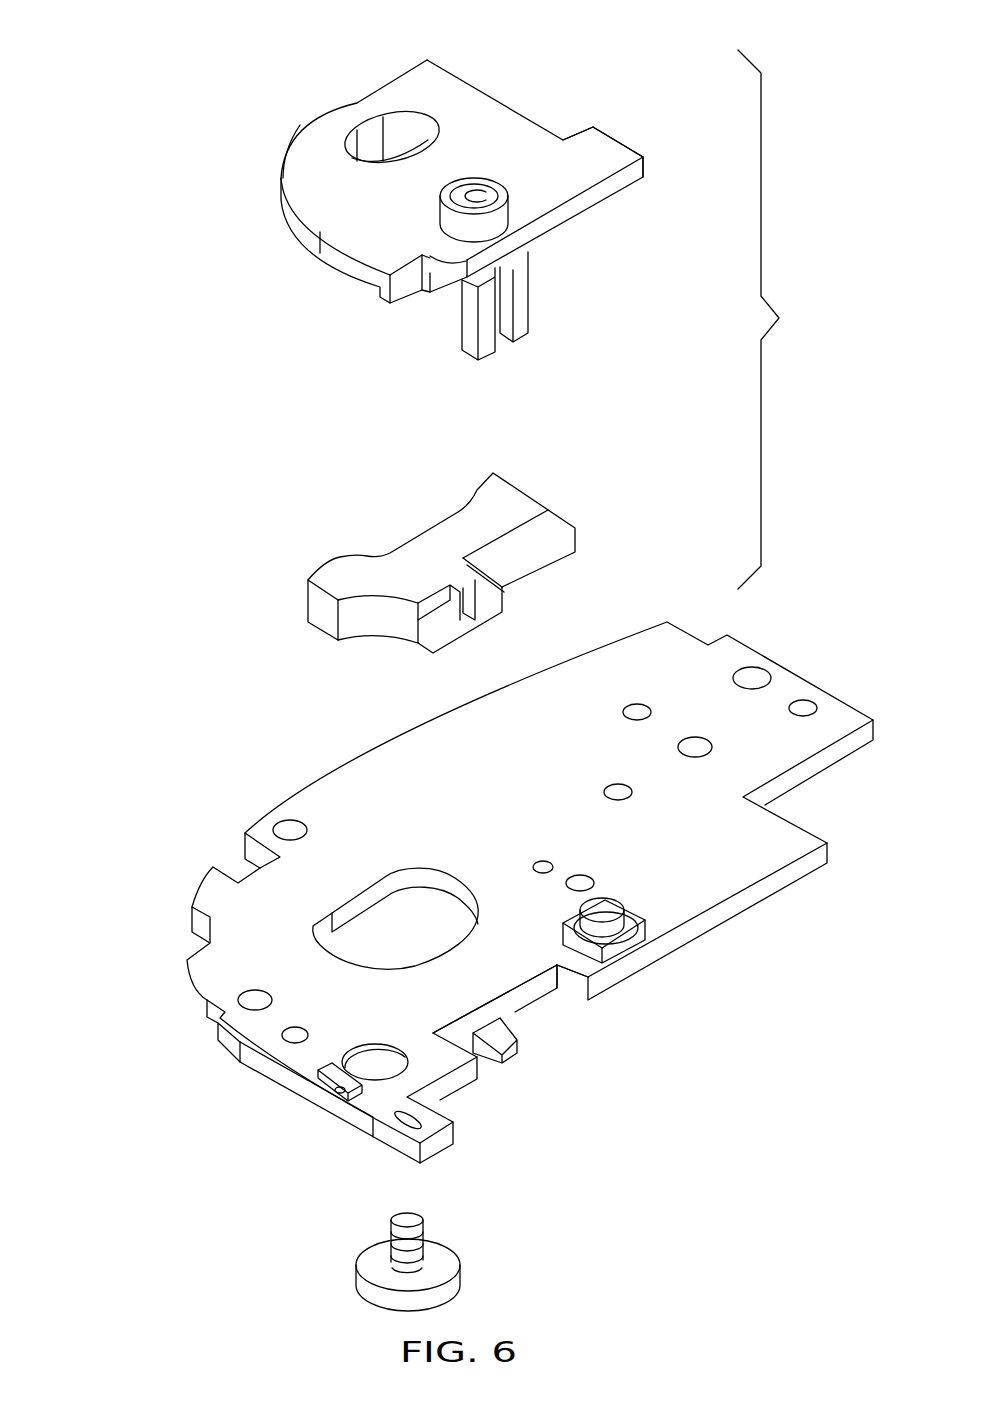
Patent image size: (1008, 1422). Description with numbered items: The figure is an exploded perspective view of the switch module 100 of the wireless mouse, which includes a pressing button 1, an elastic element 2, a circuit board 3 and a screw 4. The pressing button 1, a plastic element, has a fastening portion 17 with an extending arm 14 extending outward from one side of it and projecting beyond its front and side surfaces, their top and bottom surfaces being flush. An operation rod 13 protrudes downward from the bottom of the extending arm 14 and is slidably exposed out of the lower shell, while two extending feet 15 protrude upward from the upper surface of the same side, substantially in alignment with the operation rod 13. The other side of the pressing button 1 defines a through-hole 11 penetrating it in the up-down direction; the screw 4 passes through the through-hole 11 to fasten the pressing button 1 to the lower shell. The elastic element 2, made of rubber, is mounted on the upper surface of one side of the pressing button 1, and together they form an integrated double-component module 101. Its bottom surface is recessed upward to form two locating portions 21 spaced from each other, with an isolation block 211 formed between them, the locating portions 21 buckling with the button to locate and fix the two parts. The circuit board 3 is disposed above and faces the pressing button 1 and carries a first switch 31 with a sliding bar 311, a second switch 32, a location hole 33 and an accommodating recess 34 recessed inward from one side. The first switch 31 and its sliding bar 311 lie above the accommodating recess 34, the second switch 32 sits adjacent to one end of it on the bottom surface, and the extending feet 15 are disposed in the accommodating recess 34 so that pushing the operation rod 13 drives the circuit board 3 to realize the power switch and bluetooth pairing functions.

The switch module 100 is at (122, 20).
The pressing button 1 is at (584, 99).
The through-hole 11 is at (393, 148).
The operation rod 13 is at (492, 222).
The extending arm 14 is at (603, 157).
The extending foot 15 is at (470, 342).
The fastening portion 17 is at (325, 217).
The double-component module 101 is at (784, 319).
The elastic element 2 is at (582, 557).
The locating portion 21 is at (442, 613).
The isolation block 211 is at (475, 580).
The circuit board 3 is at (777, 908).
The first switch 31 is at (522, 1020).
The sliding bar 311 is at (508, 1057).
The second switch 32 is at (613, 947).
The location hole 33 is at (388, 920).
The accommodating recess 34 is at (562, 1000).
The screw 4 is at (490, 1253).